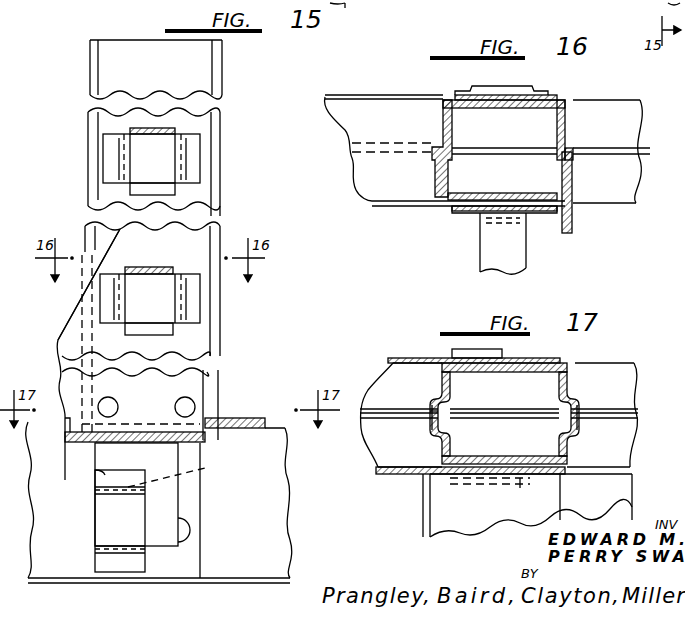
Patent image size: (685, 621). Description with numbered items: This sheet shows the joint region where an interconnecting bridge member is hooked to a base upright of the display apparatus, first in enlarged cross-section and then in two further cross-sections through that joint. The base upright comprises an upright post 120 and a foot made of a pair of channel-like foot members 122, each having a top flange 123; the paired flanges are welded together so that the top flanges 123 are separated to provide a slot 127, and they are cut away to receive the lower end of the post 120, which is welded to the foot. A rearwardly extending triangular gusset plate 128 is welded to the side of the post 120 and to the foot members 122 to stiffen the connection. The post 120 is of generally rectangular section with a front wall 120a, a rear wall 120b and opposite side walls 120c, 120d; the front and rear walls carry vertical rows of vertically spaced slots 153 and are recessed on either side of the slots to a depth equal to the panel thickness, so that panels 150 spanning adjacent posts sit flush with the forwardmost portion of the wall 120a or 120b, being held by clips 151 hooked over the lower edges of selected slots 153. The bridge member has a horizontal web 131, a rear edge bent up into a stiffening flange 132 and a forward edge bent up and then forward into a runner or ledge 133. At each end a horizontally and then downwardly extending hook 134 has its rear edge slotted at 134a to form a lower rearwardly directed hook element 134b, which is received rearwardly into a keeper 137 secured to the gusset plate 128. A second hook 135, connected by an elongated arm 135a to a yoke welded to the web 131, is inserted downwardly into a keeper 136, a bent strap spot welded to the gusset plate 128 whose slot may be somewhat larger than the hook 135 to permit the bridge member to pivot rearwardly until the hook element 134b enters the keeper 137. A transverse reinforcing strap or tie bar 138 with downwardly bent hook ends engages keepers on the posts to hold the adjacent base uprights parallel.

In FIG. 15, the upright post 120 is at (89, 77).
In FIG. 17, the upright post 120 is at (560, 366).
In FIG. 16, the front wall 120a is at (561, 134).
In FIG. 16, the rear wall 120b is at (454, 134).
In FIG. 16, the side wall 120c is at (543, 111).
In FIG. 16, the side wall 120d is at (538, 193).
In FIG. 15, the foot member 122 is at (262, 549).
In FIG. 16, the top flange 123 is at (596, 100).
In FIG. 17, the top flange 123 is at (384, 382).
In FIG. 16, the slot 127 is at (602, 146).
In FIG. 15, the gusset plate 128 is at (72, 318).
In FIG. 16, the gusset plate 128 is at (410, 95).
In FIG. 17, the gusset plate 128 is at (447, 358).
In FIG. 15, the horizontal web 131 is at (158, 430).
In FIG. 17, the horizontal web 131 is at (512, 516).
In FIG. 15, the stiffening flange 132 is at (65, 461).
In FIG. 17, the stiffening flange 132 is at (422, 502).
In FIG. 15, the runner or ledge 133 is at (241, 422).
In FIG. 17, the runner or ledge 133 is at (612, 503).
In FIG. 15, the hook 134 is at (165, 503).
In FIG. 17, the hook 134 is at (526, 480).
In FIG. 15, the slot 134a is at (125, 483).
In FIG. 15, the hook element 134b is at (188, 474).
In FIG. 15, the hook 135 is at (160, 329).
In FIG. 15, the elongated arm 135a is at (128, 267).
In FIG. 16, the elongated arm 135a is at (524, 252).
In FIG. 15, the keeper 136 is at (190, 292).
In FIG. 16, the keeper 136 is at (500, 88).
In FIG. 15, the keeper 137 is at (106, 517).
In FIG. 17, the keeper 137 is at (496, 351).
In FIG. 15, the reinforcing strap or tie bar 138 is at (160, 129).
In FIG. 16, the panel 150 is at (572, 222).
In FIG. 17, the clip 151 is at (436, 400).
In FIG. 17, the slot 153 is at (430, 420).